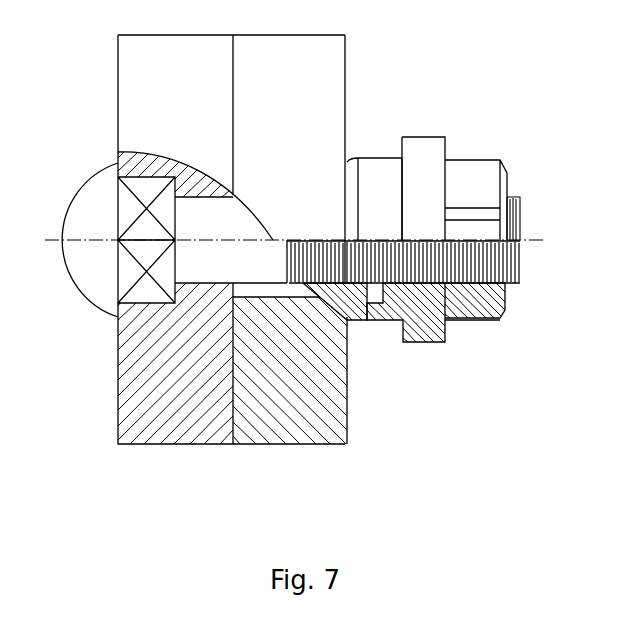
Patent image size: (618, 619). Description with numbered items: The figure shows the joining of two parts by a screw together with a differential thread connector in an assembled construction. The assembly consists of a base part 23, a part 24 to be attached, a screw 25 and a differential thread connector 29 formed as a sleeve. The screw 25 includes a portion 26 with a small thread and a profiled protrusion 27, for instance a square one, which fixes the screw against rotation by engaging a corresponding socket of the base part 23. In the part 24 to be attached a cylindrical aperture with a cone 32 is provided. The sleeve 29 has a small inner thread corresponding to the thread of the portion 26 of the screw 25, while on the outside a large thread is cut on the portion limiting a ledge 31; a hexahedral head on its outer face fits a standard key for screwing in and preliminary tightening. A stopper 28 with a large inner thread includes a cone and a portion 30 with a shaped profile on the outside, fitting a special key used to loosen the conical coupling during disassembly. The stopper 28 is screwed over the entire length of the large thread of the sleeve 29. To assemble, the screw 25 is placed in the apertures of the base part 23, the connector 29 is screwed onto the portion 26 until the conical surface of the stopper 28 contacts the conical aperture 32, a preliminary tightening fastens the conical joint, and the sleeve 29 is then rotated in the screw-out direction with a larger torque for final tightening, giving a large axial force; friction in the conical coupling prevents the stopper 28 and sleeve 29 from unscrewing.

The base part 23 is at (147, 342).
The part to be attached 24 is at (275, 350).
The screw 25 is at (213, 264).
The portion with a small thread 26 is at (477, 291).
The profiled protrusion 27 is at (147, 228).
The stopper 28 is at (380, 188).
The differential thread connector (sleeve) 29 is at (472, 183).
The portion with a shaped profile 30 is at (415, 198).
The ledge 31 is at (440, 312).
The cone (conical aperture) 32 is at (340, 297).